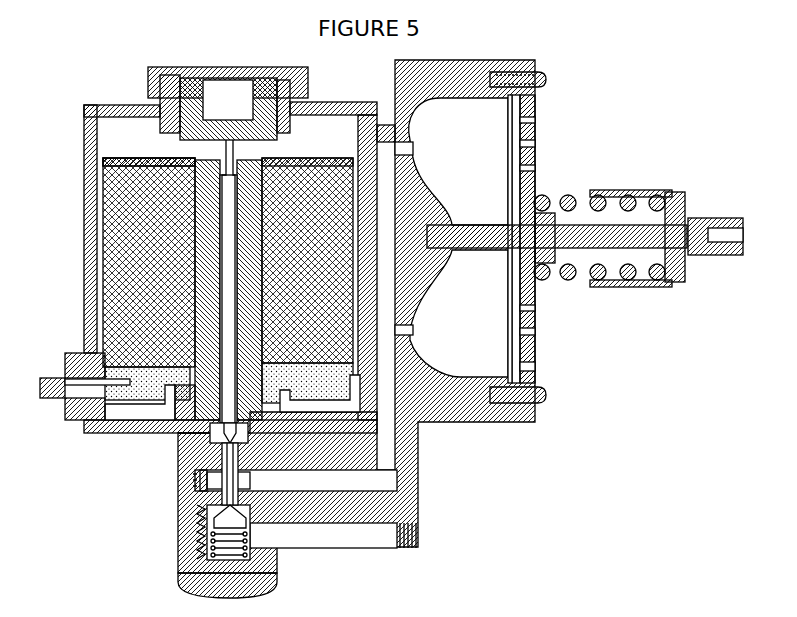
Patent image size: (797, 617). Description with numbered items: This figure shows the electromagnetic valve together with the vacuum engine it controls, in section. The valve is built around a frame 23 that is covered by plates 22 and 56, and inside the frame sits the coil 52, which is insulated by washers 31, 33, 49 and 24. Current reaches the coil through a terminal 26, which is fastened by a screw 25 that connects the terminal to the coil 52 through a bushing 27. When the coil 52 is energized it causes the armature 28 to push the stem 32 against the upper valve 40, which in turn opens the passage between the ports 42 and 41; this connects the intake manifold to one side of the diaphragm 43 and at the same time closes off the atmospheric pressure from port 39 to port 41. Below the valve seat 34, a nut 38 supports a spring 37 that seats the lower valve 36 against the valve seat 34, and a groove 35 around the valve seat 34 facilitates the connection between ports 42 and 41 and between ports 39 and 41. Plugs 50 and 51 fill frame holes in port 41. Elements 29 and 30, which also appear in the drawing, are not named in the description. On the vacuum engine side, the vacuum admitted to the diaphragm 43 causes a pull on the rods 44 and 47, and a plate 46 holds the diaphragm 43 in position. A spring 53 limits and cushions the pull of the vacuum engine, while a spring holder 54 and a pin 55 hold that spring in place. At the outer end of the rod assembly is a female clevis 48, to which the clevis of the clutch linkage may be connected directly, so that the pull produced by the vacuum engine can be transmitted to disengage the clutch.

The plate 22 is at (84, 111).
The frame 23 is at (84, 195).
The washer 24 is at (66, 359).
The screw 25 is at (40, 382).
The terminal 26 is at (65, 410).
The bushing 27 is at (133, 405).
The armature 28 is at (208, 98).
The spacer 29 is at (180, 137).
The pole piece 30 is at (195, 153).
The washer 31 is at (118, 160).
The stem 32 is at (240, 150).
The washer 33 is at (266, 378).
The valve seat 34 is at (250, 476).
The groove 35 is at (195, 484).
The lower valve 36 is at (248, 521).
The spring 37 is at (247, 546).
The nut 38 is at (178, 580).
The port 39 is at (178, 437).
The upper valve 40 is at (248, 430).
The port 41 is at (298, 482).
The port 42 is at (333, 536).
The diaphragm 43 is at (451, 237).
The rod 44 is at (460, 232).
The plate 46 is at (530, 86).
The rod 47 is at (595, 265).
The female clevis 48 is at (706, 218).
The washer 49 is at (355, 386).
The plug 50 is at (418, 492).
The plug 51 is at (385, 120).
The coil 52 is at (100, 271).
The spring 53 is at (568, 194).
The spring holder 54 is at (620, 190).
The pin 55 is at (680, 190).
The plate 56 is at (148, 77).